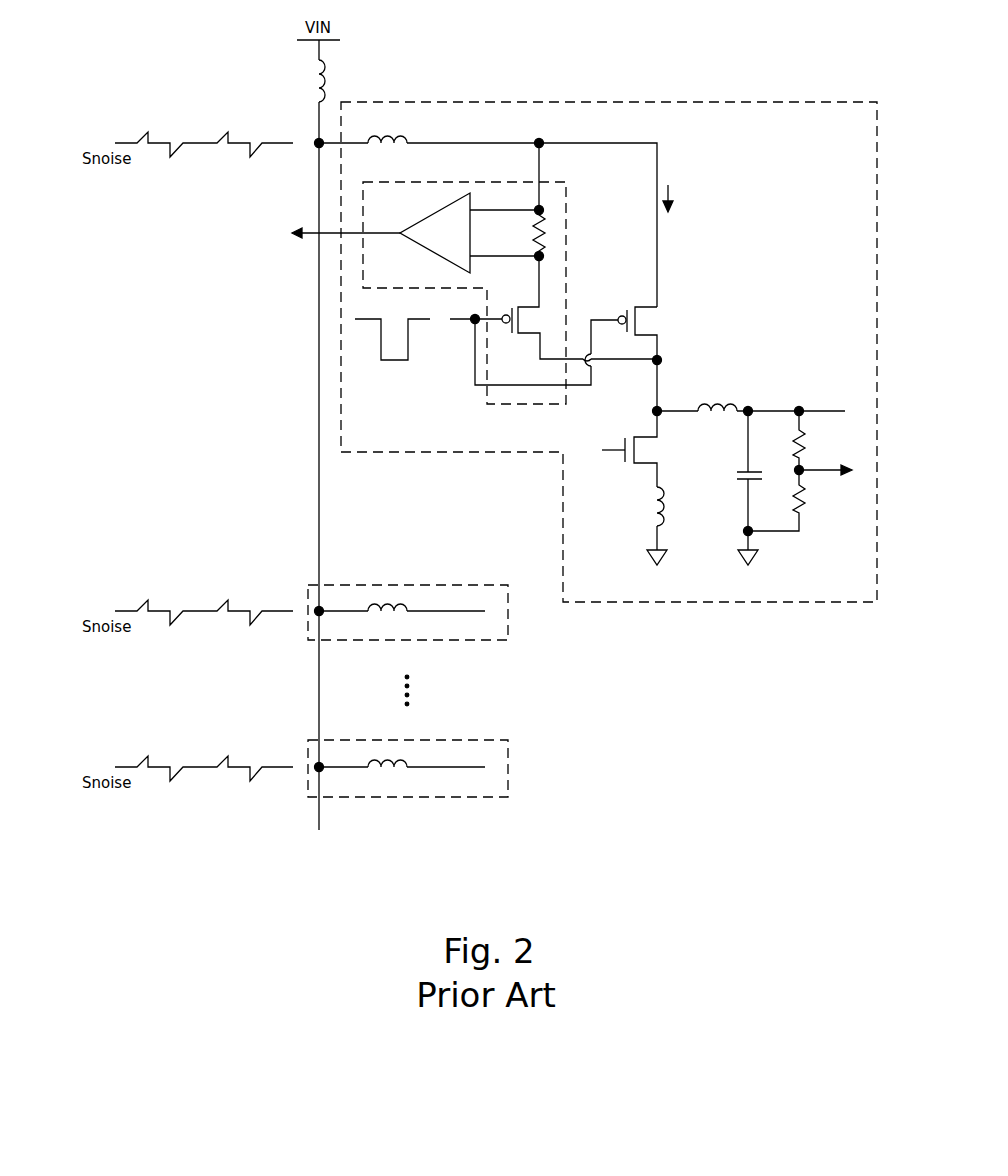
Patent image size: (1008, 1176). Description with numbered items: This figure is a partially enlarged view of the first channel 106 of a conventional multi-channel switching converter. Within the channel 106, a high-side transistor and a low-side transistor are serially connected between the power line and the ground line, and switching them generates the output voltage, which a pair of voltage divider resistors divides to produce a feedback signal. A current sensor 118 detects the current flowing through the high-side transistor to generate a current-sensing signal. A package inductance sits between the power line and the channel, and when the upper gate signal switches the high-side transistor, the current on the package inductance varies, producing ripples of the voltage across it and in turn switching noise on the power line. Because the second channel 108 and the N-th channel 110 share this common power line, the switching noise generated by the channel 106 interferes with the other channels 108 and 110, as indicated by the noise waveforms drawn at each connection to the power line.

The first channel 106 is at (606, 100).
The second channel 108 is at (405, 585).
The N-th channel 110 is at (508, 767).
The current sensor 118 is at (567, 242).